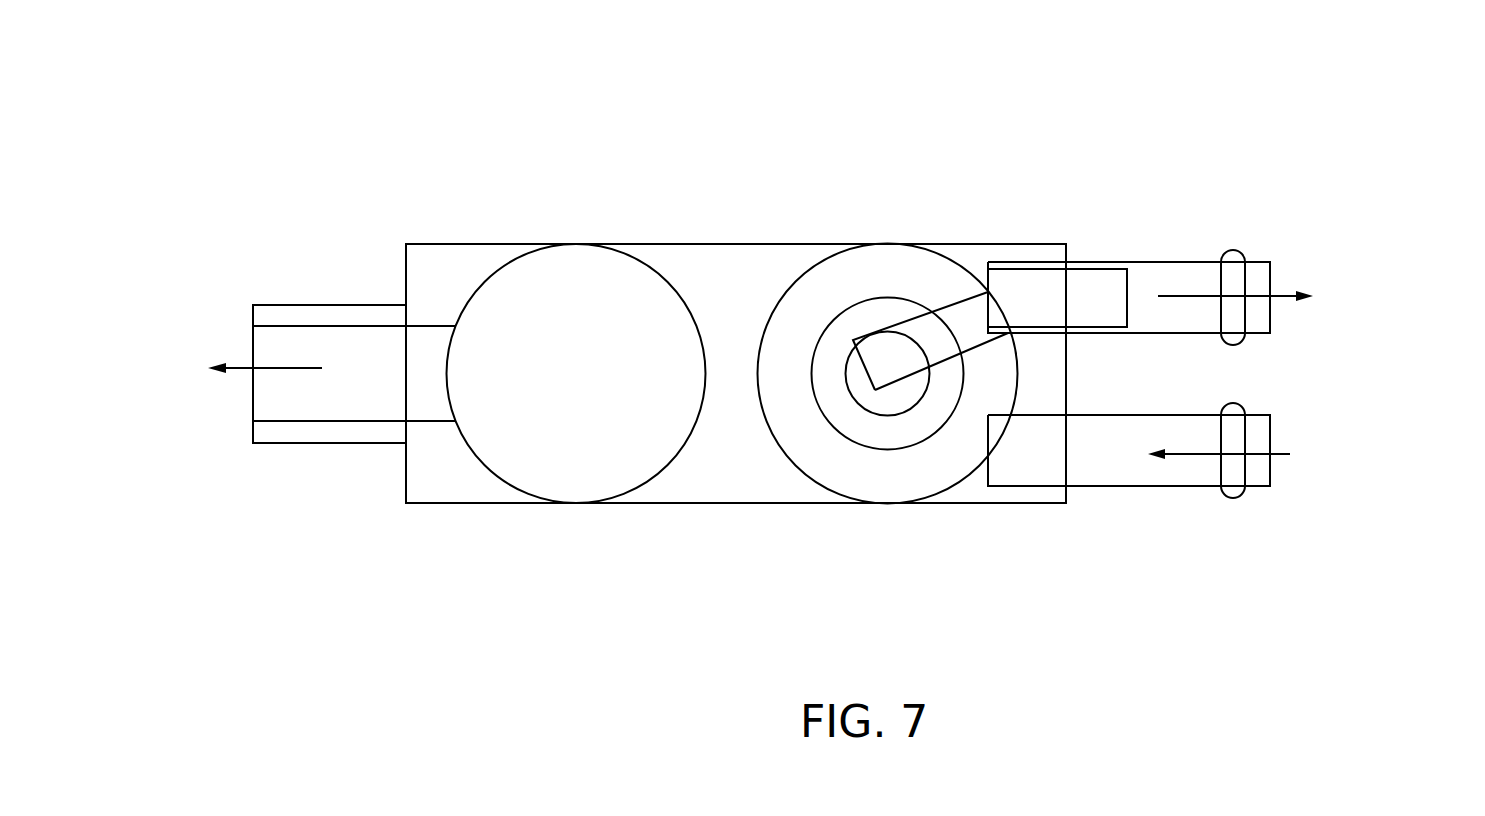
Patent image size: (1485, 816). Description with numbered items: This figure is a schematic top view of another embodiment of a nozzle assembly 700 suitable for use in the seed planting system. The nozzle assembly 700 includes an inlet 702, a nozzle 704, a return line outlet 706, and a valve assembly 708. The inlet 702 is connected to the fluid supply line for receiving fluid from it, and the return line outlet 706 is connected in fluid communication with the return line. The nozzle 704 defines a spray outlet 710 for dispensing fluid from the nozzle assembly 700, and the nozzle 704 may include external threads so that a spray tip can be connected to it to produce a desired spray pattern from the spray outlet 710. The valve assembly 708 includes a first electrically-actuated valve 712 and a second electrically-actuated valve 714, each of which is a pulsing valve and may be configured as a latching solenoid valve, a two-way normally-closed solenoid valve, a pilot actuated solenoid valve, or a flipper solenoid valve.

The nozzle assembly 700 is at (262, 149).
The inlet 702 is at (1160, 485).
The nozzle 704 is at (302, 303).
The return line outlet 706 is at (1272, 262).
The valve assembly 708 is at (1053, 228).
The spray outlet 710 is at (273, 398).
The first electrically-actuated valve 712 is at (888, 498).
The second electrically-actuated valve 714 is at (516, 490).